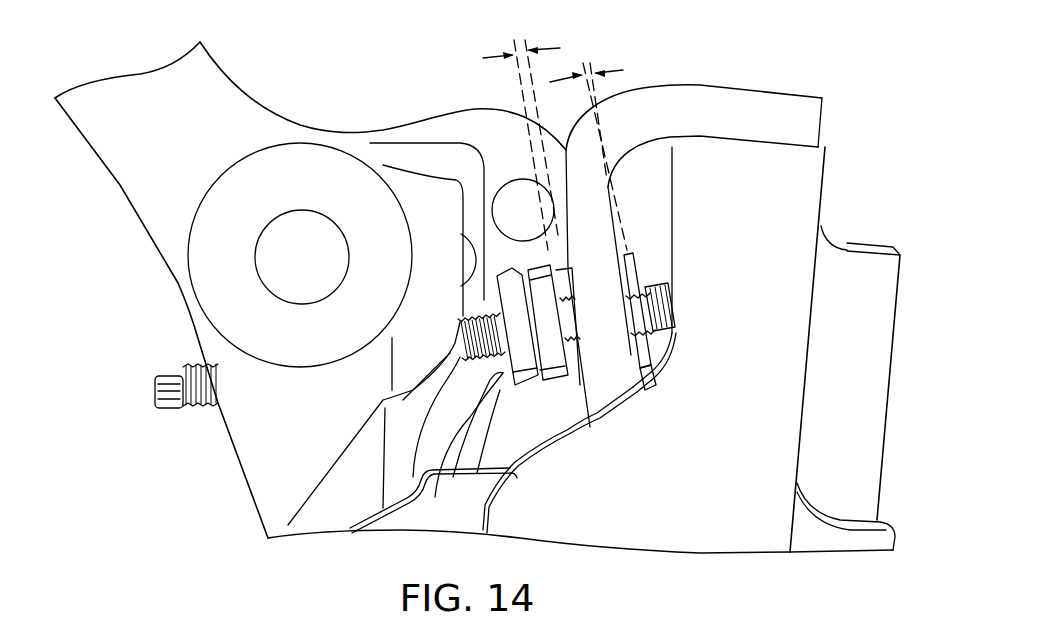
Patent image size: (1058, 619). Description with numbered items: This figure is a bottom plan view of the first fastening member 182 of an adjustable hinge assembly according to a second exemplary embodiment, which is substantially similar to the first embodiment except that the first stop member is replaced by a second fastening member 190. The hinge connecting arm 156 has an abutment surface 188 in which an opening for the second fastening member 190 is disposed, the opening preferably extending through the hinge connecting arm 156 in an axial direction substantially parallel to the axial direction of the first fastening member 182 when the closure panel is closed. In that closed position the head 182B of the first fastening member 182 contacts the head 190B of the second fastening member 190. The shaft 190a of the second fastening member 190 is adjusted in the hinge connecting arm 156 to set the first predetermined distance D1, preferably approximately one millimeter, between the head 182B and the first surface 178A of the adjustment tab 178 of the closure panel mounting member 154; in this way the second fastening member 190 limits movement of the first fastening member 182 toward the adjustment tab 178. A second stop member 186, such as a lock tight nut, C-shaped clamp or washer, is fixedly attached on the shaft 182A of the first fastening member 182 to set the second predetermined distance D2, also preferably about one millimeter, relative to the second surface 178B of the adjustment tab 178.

The closure panel mounting member 154 is at (829, 188).
The hinge connecting arm 156 is at (118, 189).
The adjustment tab 178 is at (640, 117).
The first surface of the adjustment tab 178A is at (580, 430).
The second surface of the adjustment tab 178B is at (643, 391).
The first fastening member 182 is at (652, 283).
The shaft of the first fastening member 182A is at (666, 330).
The head of the first fastening member 182B is at (558, 382).
The second stop member 186 is at (658, 379).
The abutment surface 188 is at (461, 236).
The second fastening member 190 is at (456, 474).
The shaft of the second fastening member 190a is at (205, 408).
The head of the second fastening member 190B is at (527, 386).
The first predetermined distance D1 is at (523, 43).
The second predetermined distance D2 is at (587, 62).